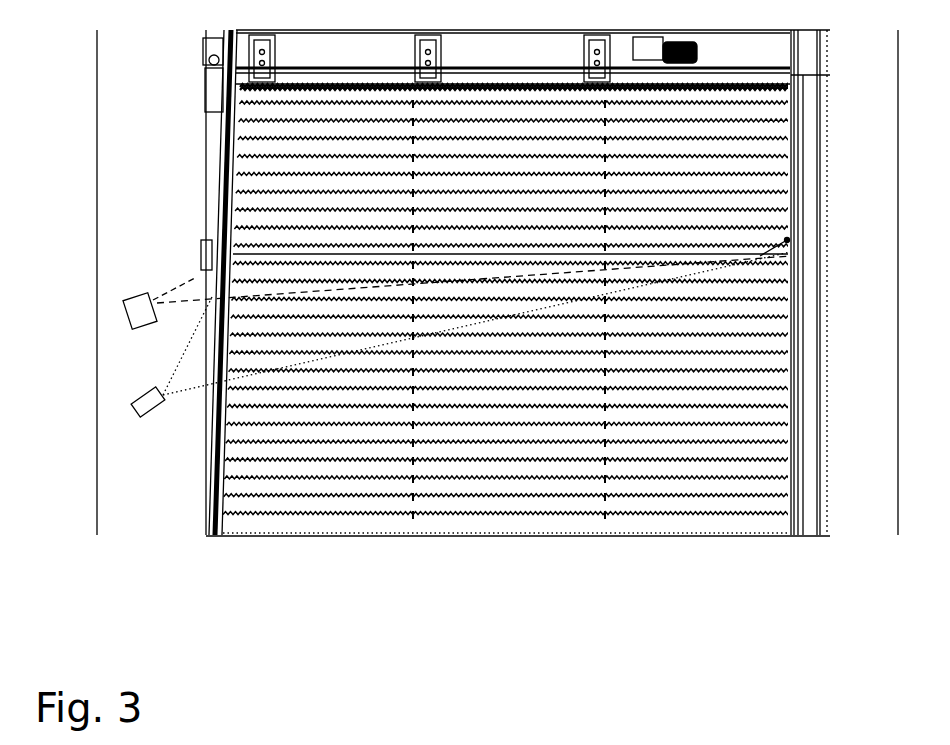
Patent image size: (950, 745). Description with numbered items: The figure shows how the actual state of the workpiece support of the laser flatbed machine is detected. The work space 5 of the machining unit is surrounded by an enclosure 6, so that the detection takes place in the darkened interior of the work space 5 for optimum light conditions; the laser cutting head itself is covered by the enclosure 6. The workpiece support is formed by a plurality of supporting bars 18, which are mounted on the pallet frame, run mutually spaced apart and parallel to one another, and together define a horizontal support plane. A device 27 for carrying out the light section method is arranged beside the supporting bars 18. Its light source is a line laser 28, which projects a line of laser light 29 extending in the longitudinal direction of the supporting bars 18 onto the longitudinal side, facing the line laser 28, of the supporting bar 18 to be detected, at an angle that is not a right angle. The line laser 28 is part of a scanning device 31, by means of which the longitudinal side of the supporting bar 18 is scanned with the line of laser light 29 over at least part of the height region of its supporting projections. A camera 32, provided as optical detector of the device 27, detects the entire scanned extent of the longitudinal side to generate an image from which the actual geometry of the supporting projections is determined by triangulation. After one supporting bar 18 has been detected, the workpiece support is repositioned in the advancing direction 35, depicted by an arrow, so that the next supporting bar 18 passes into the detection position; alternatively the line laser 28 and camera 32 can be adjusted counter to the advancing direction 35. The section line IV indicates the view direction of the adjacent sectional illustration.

The work space 5 is at (161, 80).
The enclosure 6 is at (97, 123).
The supporting bars 18 is at (243, 235).
The device for carrying out the light section method 27 is at (110, 360).
The line laser 28 is at (150, 412).
The line of laser light 29 is at (787, 240).
The scanning device 31 is at (150, 483).
The camera 32 is at (147, 291).
The section view direction IV is at (880, 355).
The advancing direction 35 is at (847, 440).